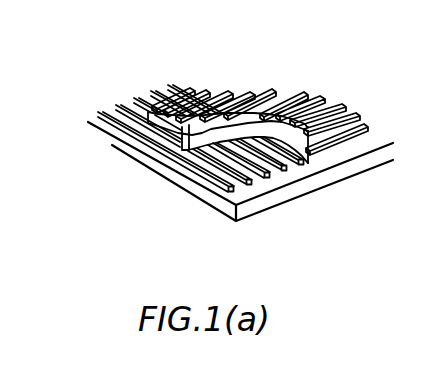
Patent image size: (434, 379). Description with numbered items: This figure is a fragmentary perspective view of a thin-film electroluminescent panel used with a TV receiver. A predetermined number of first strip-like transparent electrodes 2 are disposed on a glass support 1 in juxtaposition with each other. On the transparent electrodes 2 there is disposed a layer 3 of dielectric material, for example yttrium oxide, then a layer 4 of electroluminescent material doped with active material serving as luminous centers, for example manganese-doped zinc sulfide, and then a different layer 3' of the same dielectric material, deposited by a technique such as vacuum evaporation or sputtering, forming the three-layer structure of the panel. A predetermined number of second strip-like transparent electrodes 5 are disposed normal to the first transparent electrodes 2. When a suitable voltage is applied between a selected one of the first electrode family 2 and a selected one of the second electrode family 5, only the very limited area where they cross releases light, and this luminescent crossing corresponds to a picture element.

The glass support 1 is at (270, 187).
The first strip-like transparent electrodes 2 is at (214, 171).
The layer of dielectric material 3 is at (148, 169).
The different layer of dielectric material 3' is at (169, 141).
The layer of electroluminescent material 4 is at (162, 120).
The second strip-like transparent electrodes 5 is at (247, 93).